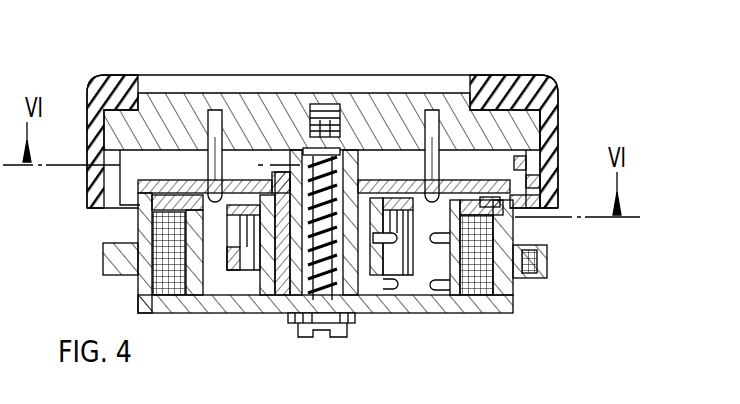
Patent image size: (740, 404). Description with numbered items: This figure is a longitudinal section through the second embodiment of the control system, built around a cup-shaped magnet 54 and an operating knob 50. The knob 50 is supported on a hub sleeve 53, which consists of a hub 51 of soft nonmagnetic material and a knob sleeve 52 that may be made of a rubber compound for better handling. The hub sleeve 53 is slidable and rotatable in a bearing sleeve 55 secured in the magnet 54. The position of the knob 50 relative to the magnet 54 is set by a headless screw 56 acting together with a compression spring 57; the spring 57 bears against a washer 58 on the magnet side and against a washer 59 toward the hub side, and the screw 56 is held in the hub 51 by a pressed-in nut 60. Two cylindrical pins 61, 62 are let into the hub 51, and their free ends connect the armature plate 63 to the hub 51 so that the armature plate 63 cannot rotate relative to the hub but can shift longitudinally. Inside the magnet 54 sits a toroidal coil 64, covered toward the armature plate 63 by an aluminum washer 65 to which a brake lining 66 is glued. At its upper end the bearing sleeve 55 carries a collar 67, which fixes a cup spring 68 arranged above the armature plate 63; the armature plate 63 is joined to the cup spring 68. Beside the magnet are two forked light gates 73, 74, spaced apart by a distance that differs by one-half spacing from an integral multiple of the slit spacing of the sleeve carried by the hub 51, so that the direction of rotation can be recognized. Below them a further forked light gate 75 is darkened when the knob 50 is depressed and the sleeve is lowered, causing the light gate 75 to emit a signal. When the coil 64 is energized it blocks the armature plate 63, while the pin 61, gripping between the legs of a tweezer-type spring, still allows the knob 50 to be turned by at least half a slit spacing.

The operating knob 50 is at (163, 105).
The hub 51 is at (464, 118).
The knob sleeve 52 is at (540, 88).
The hub sleeve 53 is at (357, 162).
The magnet 54 is at (236, 303).
The bearing sleeve 55 is at (289, 290).
The headless screw 56 is at (343, 338).
The compression spring 57 is at (338, 282).
The washer 58 is at (309, 338).
The washer 59 is at (302, 198).
The pressed-in nut 60 is at (335, 105).
The cylindrical pin 61 is at (216, 108).
The cylindrical pin 62 is at (441, 108).
The armature plate 63 is at (524, 172).
The toroidal coil 64 is at (548, 264).
The aluminum washer 65 is at (513, 223).
The brake lining 66 is at (514, 192).
The collar 67 is at (374, 178).
The cup spring 68 is at (560, 112).
The forked light gate 73 is at (177, 245).
The forked light gate 74 is at (513, 296).
The forked light gate 75 is at (445, 285).